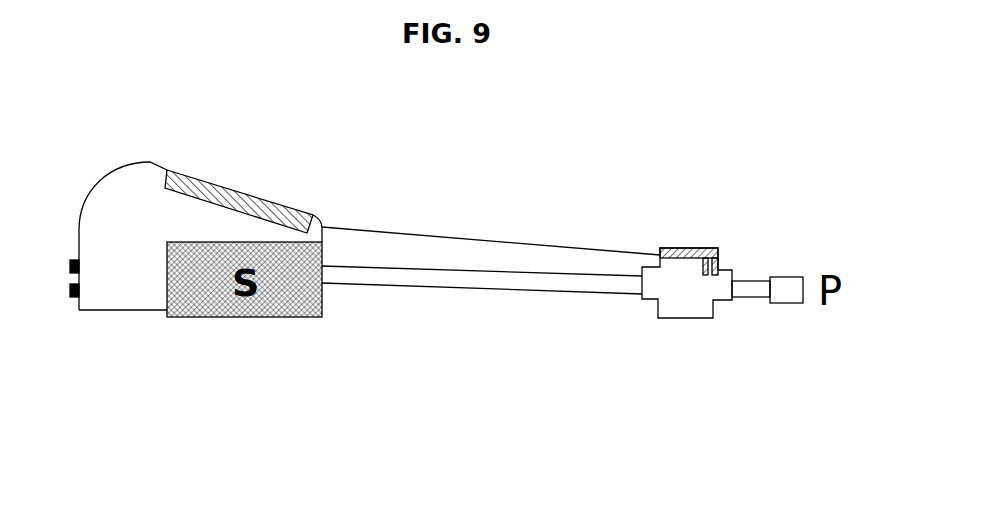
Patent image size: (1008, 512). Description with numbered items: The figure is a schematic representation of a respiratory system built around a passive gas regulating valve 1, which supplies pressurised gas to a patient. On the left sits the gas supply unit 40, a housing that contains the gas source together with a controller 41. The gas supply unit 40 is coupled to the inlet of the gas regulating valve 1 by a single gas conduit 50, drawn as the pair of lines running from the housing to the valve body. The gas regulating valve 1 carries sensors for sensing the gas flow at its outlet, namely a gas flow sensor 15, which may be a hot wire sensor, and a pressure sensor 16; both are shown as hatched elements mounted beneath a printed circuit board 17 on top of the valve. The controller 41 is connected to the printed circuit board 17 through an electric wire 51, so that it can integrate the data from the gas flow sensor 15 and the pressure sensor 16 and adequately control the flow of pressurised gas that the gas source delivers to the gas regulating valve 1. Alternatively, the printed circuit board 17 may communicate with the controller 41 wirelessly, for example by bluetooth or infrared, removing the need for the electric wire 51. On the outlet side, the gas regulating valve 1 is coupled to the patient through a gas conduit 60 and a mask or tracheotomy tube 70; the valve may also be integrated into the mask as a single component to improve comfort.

The gas supply unit 40 is at (133, 148).
The controller 41 is at (267, 196).
The electric wire 51 is at (438, 237).
The gas conduit 50 is at (472, 288).
The gas regulating valve 1 is at (676, 341).
The printed circuit board 17 is at (661, 247).
The gas flow sensor 15 is at (706, 257).
The pressure sensor 16 is at (716, 257).
The gas conduit 60 is at (747, 298).
The mask or tracheotomy tube 70 is at (785, 293).